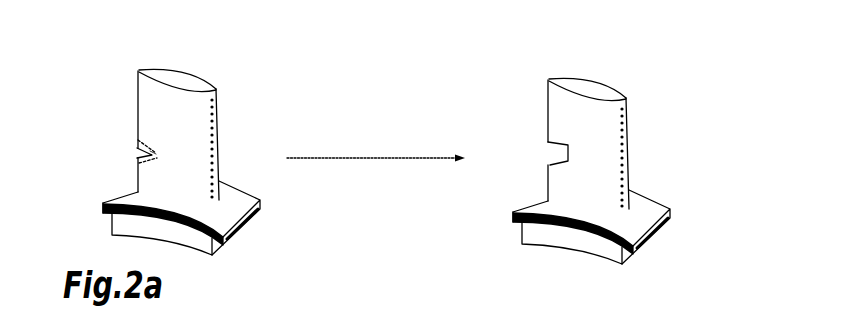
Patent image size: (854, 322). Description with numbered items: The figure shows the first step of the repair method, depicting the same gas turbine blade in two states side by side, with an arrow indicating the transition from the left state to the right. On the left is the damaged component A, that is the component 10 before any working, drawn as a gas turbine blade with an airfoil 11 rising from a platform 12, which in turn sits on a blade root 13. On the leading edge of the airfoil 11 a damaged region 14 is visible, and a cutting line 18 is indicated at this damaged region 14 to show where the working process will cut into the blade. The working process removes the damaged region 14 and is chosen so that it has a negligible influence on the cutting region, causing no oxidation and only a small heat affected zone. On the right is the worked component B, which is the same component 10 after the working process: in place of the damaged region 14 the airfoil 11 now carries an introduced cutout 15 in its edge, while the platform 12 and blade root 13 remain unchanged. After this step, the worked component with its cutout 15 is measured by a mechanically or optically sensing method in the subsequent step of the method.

The component 10 is at (260, 65).
The airfoil 11 is at (148, 102).
The platform 12 is at (102, 205).
The blade root 13 is at (210, 258).
The damaged region 14 is at (122, 156).
The cutout 15 is at (509, 123).
The cutting line 18 is at (170, 145).
The damaged component A is at (268, 240).
The worked component B is at (691, 271).